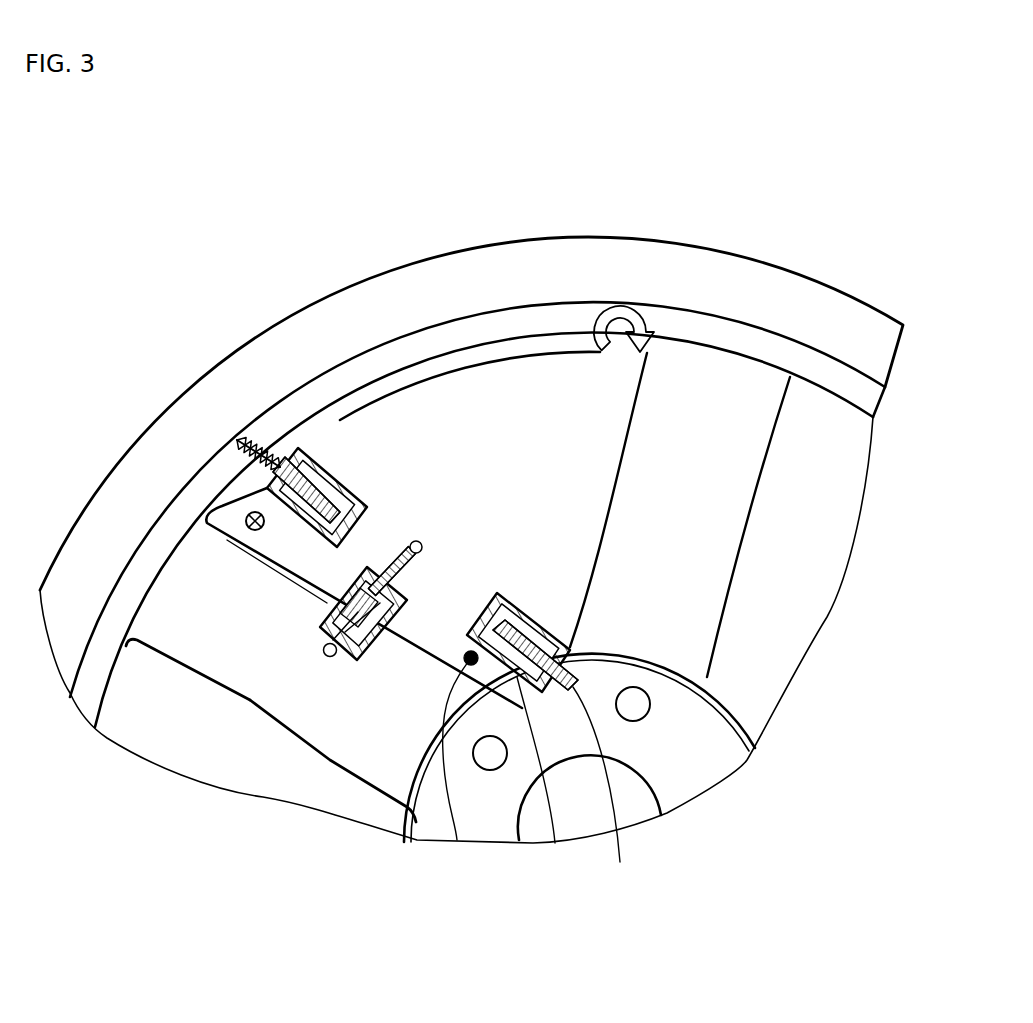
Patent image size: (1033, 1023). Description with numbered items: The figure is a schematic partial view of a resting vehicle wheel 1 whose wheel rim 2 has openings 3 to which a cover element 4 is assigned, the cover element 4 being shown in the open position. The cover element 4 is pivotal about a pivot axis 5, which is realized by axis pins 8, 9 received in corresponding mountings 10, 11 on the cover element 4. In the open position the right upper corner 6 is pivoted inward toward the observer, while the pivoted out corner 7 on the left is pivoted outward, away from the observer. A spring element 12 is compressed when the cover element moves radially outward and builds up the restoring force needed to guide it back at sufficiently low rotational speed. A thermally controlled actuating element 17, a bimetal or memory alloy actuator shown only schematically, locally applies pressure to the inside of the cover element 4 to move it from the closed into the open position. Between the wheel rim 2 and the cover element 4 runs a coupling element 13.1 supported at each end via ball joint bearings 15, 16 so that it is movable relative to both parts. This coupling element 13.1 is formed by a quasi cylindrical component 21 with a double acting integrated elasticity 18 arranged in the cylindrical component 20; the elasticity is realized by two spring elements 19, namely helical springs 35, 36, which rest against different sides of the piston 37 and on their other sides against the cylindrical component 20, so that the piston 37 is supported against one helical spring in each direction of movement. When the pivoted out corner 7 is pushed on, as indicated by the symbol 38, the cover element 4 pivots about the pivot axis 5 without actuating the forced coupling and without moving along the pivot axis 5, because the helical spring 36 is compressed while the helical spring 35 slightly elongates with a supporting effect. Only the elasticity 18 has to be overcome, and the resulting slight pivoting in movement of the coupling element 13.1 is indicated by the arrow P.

The vehicle wheel 1 is at (670, 183).
The wheel rim 2 is at (148, 707).
The openings 3 is at (632, 347).
The cover element 4 is at (497, 393).
The pivot axis 5 is at (580, 652).
The right upper corner 6 is at (618, 373).
The pivoted out corner 7 is at (258, 500).
The axis pin 8 is at (620, 862).
The axis pin 9 is at (322, 495).
The mounting 10 is at (555, 843).
The mounting 11 is at (350, 470).
The spring element 12 is at (263, 433).
The coupling element 13.1 is at (386, 543).
The ball joint bearing 15 is at (328, 655).
The ball joint bearing 16 is at (412, 542).
The thermally controlled actuating element 17 is at (455, 843).
The integrated elasticity 18 is at (320, 598).
The spring elements 19 is at (303, 617).
The cylindrical component 20 is at (360, 662).
The quasi cylindrical component 21 is at (403, 573).
The helical spring 35 is at (347, 653).
The helical spring 36 is at (400, 605).
The piston 37 is at (377, 633).
The symbol 38 is at (245, 520).
The arrow P is at (612, 322).